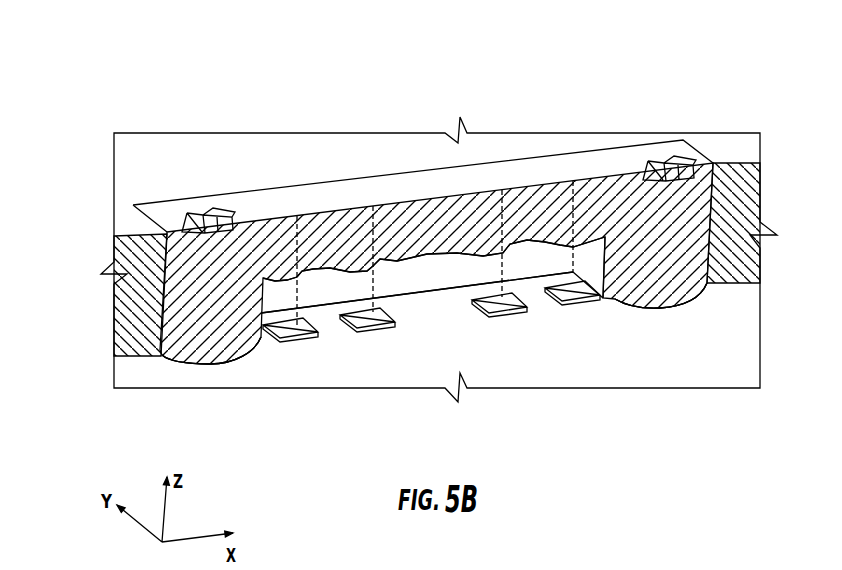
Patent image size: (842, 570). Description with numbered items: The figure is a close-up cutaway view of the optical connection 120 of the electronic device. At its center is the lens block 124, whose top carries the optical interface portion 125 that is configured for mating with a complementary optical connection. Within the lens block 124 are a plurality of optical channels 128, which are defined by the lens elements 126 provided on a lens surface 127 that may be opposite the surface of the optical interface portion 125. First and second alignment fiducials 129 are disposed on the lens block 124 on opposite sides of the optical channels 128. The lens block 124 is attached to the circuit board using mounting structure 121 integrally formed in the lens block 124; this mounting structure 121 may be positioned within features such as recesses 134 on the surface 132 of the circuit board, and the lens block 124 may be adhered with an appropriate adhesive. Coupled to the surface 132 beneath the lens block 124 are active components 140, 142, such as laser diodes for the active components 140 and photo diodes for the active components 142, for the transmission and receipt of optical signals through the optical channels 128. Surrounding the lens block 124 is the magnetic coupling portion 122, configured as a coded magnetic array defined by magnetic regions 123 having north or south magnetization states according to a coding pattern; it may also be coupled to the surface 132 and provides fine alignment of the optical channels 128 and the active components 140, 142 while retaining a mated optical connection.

The optical connection 120 is at (152, 88).
The mounting structure 121 is at (215, 343).
The magnetic coupling portion 122 is at (100, 168).
The magnetic regions 123 is at (412, 308).
The lens block 124 is at (609, 165).
The optical interface portion 125 is at (393, 203).
The lens elements 126 is at (368, 268).
The lens surface 127 is at (575, 262).
The optical channels 128 is at (293, 255).
The alignment fiducials 129 is at (218, 228).
The surface of the circuit board 132 is at (445, 343).
The recesses 134 is at (232, 365).
The active components 140 is at (307, 340).
The active components 142 is at (372, 332).